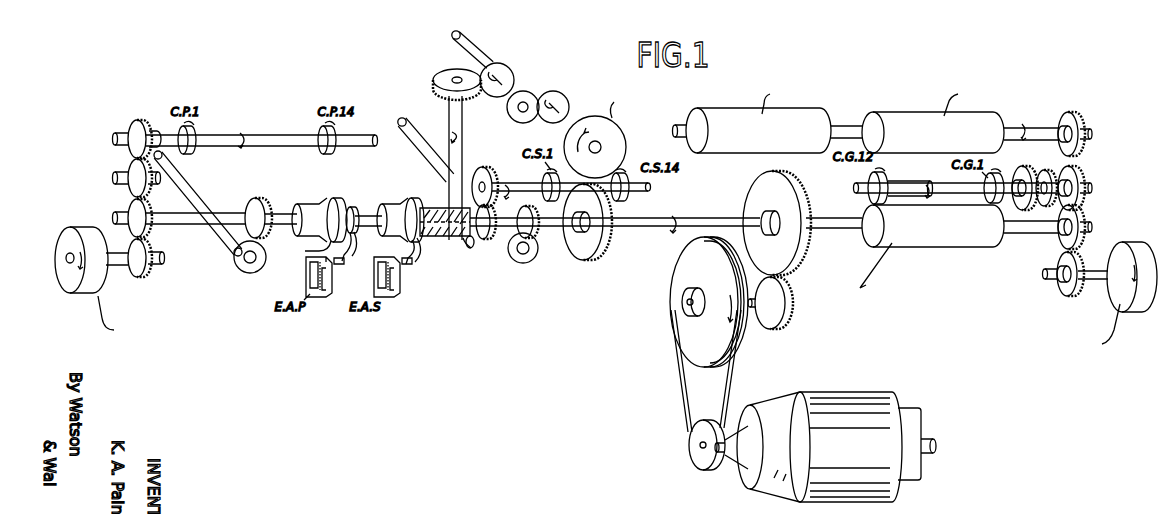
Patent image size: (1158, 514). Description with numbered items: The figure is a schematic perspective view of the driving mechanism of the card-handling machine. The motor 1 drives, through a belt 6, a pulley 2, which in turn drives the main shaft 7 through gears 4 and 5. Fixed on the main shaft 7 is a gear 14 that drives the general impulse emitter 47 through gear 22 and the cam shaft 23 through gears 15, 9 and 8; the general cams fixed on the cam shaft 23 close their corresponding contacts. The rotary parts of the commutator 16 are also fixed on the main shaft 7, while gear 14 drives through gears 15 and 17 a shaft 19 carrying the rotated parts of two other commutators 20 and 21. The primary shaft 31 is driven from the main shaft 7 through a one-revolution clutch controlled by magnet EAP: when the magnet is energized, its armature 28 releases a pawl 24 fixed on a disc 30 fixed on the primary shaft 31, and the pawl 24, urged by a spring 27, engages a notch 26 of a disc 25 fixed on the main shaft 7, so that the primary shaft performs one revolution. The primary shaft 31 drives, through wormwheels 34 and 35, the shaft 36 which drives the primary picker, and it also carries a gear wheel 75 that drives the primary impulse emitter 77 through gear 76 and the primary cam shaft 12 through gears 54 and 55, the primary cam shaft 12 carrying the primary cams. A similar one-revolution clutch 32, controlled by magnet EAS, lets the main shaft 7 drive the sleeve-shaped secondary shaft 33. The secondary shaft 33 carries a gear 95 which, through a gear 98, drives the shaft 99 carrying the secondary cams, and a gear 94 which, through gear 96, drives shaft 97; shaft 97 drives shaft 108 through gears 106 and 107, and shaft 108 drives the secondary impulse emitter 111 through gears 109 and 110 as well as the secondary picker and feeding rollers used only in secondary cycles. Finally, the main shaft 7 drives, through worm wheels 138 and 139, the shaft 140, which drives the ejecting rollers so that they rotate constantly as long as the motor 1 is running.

The motor 1 is at (835, 395).
The pulley 2 is at (674, 278).
The gear 4 is at (771, 330).
The gear 5 is at (754, 189).
The belt 6 is at (734, 388).
The main shaft 7 is at (723, 219).
The gear 8 is at (1018, 172).
The gear 9 is at (1044, 170).
The primary cam shaft 12 is at (256, 144).
The gear 14 is at (1080, 217).
The gear 15 is at (1078, 178).
The commutator 16 is at (929, 242).
The gear 17 is at (1074, 122).
The shaft 19 is at (1040, 133).
The commutator 20 is at (920, 118).
The commutator 21 is at (744, 112).
The gear 22 is at (1066, 295).
The cam shaft 23 is at (901, 189).
The pawl 24 is at (305, 252).
The disc 25 is at (336, 199).
The notch 26 is at (340, 252).
The spring 27 is at (352, 211).
The armature 28 is at (304, 275).
The disc 30 is at (311, 199).
The primary shaft 31 is at (286, 213).
The one-revolution clutch 32 is at (388, 202).
The secondary shaft 33 is at (422, 238).
The wormwheel 34 is at (246, 208).
The wormwheel 35 is at (234, 260).
The shaft 36 is at (186, 186).
The general impulse emitter 47 is at (1120, 306).
The gear 54 is at (126, 174).
The gear 55 is at (126, 132).
The gear wheel 75 is at (126, 215).
The gear 76 is at (134, 278).
The primary impulse emitter 77 is at (92, 294).
The gear 94 is at (466, 248).
The gear 95 is at (486, 238).
The gear 96 is at (438, 207).
The shaft 97 is at (462, 152).
The gear 98 is at (492, 179).
The shaft 99 is at (653, 187).
The gear 106 is at (444, 71).
The gear 107 is at (509, 74).
The shaft 108 is at (474, 43).
The gear 109 is at (509, 115).
The gear 110 is at (563, 101).
The secondary impulse emitter 111 is at (608, 132).
The worm wheel 138 is at (533, 244).
The worm wheel 139 is at (521, 265).
The shaft 140 is at (416, 149).